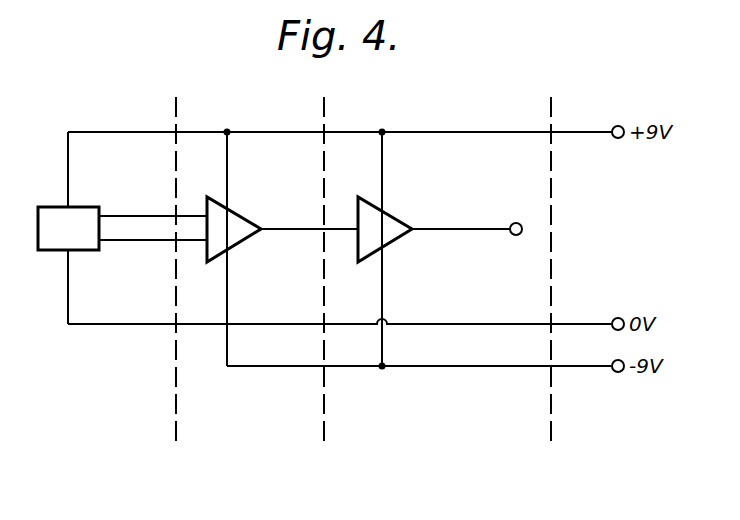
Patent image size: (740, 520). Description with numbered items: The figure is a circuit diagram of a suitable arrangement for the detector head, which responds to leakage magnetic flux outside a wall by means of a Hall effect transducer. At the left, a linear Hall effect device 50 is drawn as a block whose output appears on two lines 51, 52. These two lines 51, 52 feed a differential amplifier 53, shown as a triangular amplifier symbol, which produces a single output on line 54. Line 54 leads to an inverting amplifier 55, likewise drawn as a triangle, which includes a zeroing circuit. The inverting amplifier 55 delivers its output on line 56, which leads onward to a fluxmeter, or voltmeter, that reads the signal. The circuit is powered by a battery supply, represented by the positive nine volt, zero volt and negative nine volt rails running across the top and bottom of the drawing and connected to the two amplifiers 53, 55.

The linear Hall effect device 50 is at (60, 240).
The output line 51 is at (133, 215).
The output line 52 is at (118, 242).
The differential amplifier 53 is at (235, 212).
The output line 54 is at (277, 227).
The inverting amplifier 55 is at (393, 216).
The output line 56 is at (458, 227).